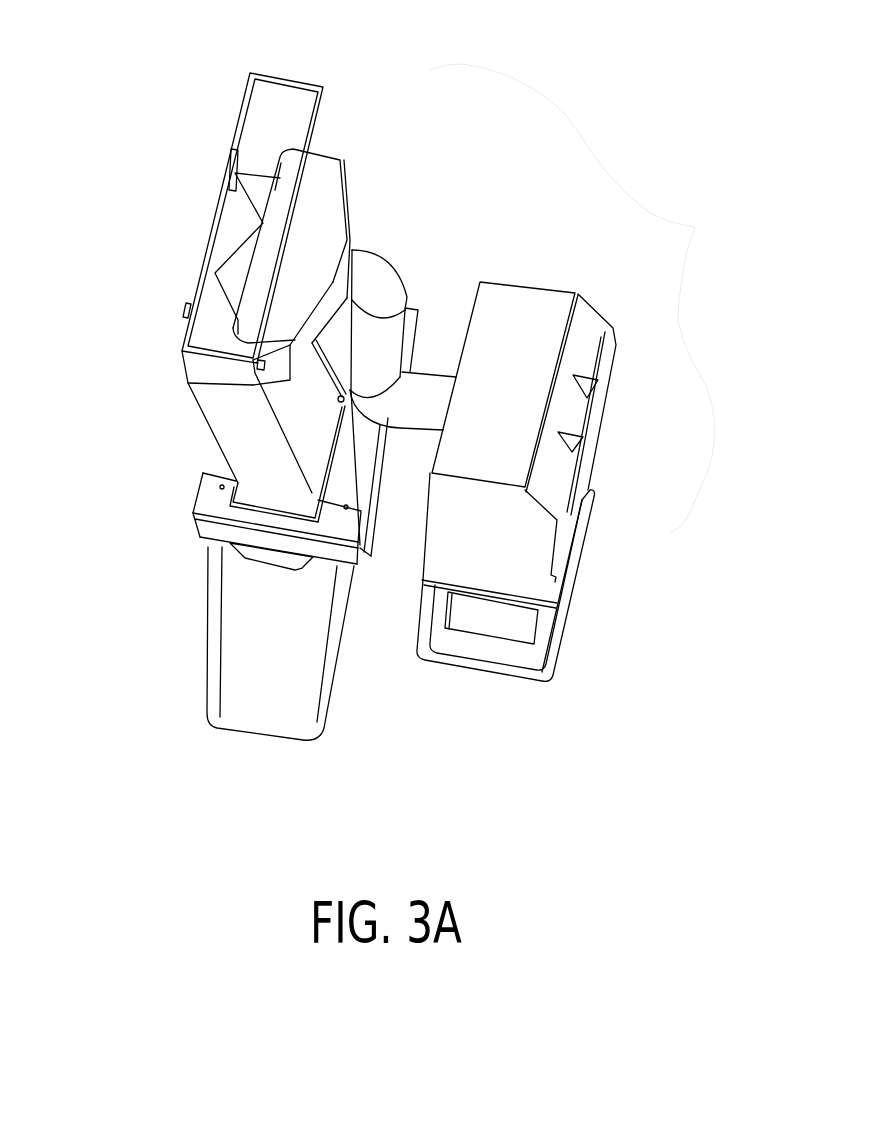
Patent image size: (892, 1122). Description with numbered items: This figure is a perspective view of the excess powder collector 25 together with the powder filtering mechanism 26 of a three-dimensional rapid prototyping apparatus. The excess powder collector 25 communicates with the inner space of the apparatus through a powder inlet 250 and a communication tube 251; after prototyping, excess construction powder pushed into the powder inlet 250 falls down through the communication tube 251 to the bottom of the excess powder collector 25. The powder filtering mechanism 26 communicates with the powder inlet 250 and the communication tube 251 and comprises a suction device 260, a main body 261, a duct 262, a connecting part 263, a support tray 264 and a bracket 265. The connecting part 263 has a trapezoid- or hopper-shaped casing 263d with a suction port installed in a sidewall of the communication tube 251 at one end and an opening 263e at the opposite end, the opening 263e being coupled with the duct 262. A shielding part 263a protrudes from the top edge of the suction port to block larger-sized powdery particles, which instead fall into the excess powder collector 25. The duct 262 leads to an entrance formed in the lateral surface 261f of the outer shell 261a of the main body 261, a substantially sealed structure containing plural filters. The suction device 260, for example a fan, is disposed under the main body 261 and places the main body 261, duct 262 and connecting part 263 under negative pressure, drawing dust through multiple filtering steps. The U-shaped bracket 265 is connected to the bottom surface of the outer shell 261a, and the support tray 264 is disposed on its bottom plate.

The excess powder collector 25 is at (202, 606).
The powder filtering mechanism 26 is at (583, 298).
The powder inlet 250 is at (274, 122).
The communication tube 251 is at (237, 430).
The suction device 260 is at (515, 605).
The main body 261 is at (515, 330).
The outer shell 261a is at (513, 547).
The lateral surface 261f is at (427, 522).
The duct 262 is at (400, 287).
The connecting part 263 is at (307, 207).
The shielding part 263a is at (280, 177).
The casing 263d is at (323, 220).
The opening 263e is at (377, 290).
The support tray 264 is at (490, 622).
The bracket 265 is at (447, 650).